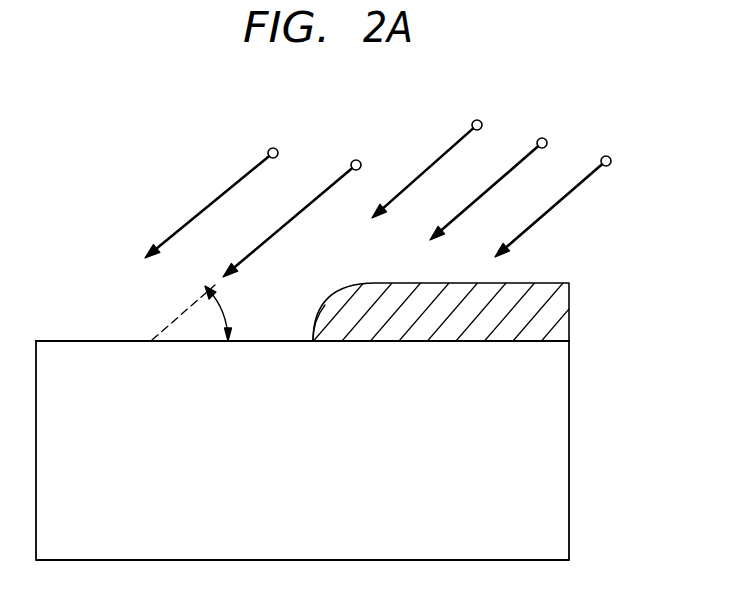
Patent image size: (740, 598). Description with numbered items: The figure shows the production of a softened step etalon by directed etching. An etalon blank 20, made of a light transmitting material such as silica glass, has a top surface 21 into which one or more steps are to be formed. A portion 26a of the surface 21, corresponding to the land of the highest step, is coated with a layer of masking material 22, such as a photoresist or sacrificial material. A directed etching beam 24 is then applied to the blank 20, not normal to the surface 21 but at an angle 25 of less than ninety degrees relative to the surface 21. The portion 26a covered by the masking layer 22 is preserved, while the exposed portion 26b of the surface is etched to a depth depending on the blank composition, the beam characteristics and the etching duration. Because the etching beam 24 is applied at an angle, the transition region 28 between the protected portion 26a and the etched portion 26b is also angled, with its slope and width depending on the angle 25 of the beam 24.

The etalon blank 20 is at (537, 455).
The top surface 21 is at (60, 340).
The layer of masking material 22 is at (548, 316).
The directed etching beam 24 is at (224, 240).
The angle 25 is at (233, 311).
The portion of the surface 26a is at (437, 350).
The exposed portion of the surface 26b is at (152, 350).
The transition region 28 is at (308, 350).